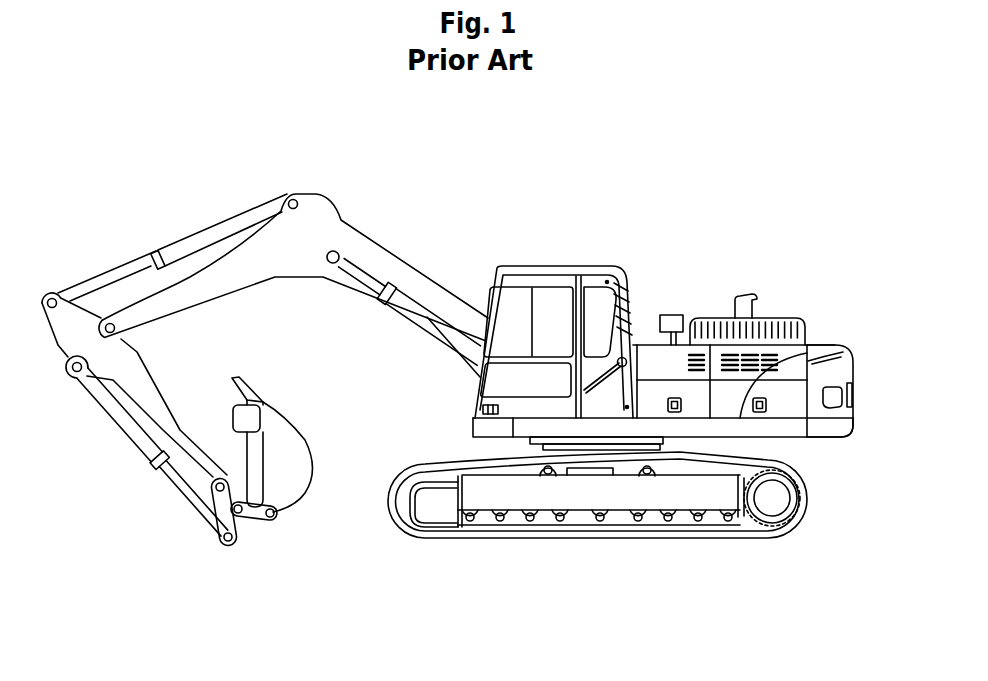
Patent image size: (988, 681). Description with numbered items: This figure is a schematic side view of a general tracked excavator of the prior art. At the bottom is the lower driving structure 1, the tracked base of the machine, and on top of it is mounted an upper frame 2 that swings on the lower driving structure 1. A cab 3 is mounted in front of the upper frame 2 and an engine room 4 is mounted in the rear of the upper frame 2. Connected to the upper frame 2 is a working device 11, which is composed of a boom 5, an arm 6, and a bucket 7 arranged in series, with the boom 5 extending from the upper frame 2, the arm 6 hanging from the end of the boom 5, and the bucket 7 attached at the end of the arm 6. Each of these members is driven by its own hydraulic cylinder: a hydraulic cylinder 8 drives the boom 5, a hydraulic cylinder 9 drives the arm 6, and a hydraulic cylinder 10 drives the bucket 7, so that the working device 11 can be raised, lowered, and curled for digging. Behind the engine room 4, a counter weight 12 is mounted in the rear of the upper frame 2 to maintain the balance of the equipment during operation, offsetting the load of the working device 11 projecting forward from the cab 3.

The lower driving structure 1 is at (495, 553).
The upper frame 2 is at (691, 352).
The cab 3 is at (585, 258).
The engine room 4 is at (775, 316).
The boom 5 is at (400, 267).
The arm 6 is at (157, 397).
The bucket 7 is at (300, 483).
The hydraulic cylinder 8 is at (412, 323).
The hydraulic cylinder 9 is at (243, 220).
The hydraulic cylinder 10 is at (113, 412).
The working device 11 is at (265, 344).
The counter weight 12 is at (848, 340).